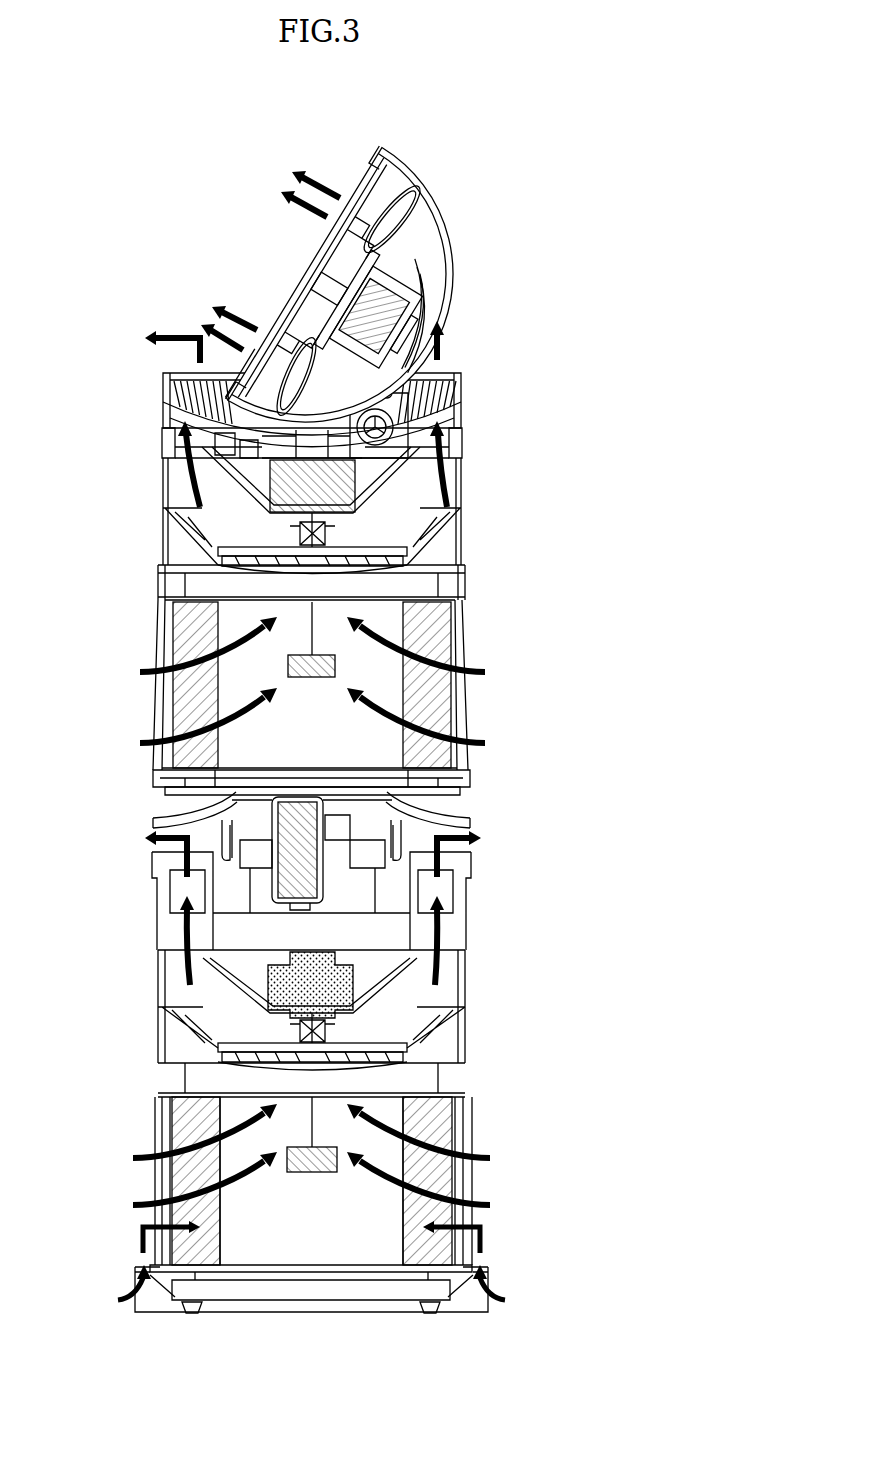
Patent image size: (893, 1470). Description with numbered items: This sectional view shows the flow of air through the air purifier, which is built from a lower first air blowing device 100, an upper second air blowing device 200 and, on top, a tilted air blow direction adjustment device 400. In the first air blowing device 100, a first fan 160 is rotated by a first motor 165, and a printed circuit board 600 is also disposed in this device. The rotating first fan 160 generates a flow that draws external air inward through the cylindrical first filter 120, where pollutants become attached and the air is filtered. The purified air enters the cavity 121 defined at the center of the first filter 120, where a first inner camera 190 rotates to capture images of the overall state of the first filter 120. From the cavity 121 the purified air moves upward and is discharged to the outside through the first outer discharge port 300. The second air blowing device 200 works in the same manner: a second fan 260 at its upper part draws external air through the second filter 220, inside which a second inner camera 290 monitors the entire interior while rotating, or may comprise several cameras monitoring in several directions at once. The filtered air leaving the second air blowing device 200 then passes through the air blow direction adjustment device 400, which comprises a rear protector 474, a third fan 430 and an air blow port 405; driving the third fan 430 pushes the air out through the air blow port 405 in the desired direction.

The first air blowing device 100 is at (138, 1127).
The first filter 120 is at (172, 1192).
The cavity 121 is at (257, 1227).
The first fan 160 is at (374, 1013).
The first motor 165 is at (338, 987).
The first inner camera 190 is at (313, 1163).
The second air blowing device 200 is at (138, 555).
The second filter 220 is at (186, 627).
The second fan 260 is at (365, 513).
The second inner camera 290 is at (323, 668).
The first outer discharge port 300 is at (490, 825).
The air blow direction adjustment device 400 is at (452, 300).
The air blow port 405 is at (358, 176).
The third fan 430 is at (396, 208).
The rear protector 474 is at (421, 357).
The printed circuit board 600 is at (255, 880).